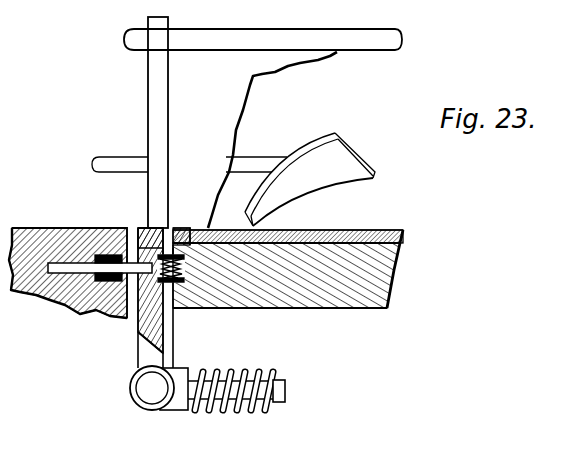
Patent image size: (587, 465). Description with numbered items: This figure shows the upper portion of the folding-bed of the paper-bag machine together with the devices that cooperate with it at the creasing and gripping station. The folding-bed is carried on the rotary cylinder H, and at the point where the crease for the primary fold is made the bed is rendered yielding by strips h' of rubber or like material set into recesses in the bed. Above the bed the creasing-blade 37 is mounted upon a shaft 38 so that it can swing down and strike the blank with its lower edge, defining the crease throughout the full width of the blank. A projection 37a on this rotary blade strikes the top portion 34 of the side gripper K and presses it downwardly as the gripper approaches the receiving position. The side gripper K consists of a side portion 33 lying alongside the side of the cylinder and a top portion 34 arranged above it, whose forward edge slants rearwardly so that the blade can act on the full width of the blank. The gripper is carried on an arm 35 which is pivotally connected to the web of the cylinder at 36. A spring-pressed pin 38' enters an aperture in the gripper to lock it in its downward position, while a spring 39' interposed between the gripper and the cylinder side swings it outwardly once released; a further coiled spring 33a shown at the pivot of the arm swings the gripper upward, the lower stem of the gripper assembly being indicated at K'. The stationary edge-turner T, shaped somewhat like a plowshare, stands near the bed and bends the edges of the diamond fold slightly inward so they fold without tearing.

The shaft 38 is at (274, 54).
The projection 37a is at (157, 91).
The creasing-blade 37 is at (228, 90).
The stationary edge-turner T is at (340, 158).
The cylinder H is at (388, 283).
The strips h' is at (295, 224).
The top portion 34 is at (175, 228).
The side portion 33 is at (148, 305).
The side gripper K is at (133, 225).
The pin 38' is at (92, 299).
The spring 39' is at (187, 298).
The lower key / stem K' is at (184, 305).
The arm 35 is at (182, 406).
The helical spring 33a is at (245, 405).
The pivotal connection 36 is at (287, 390).